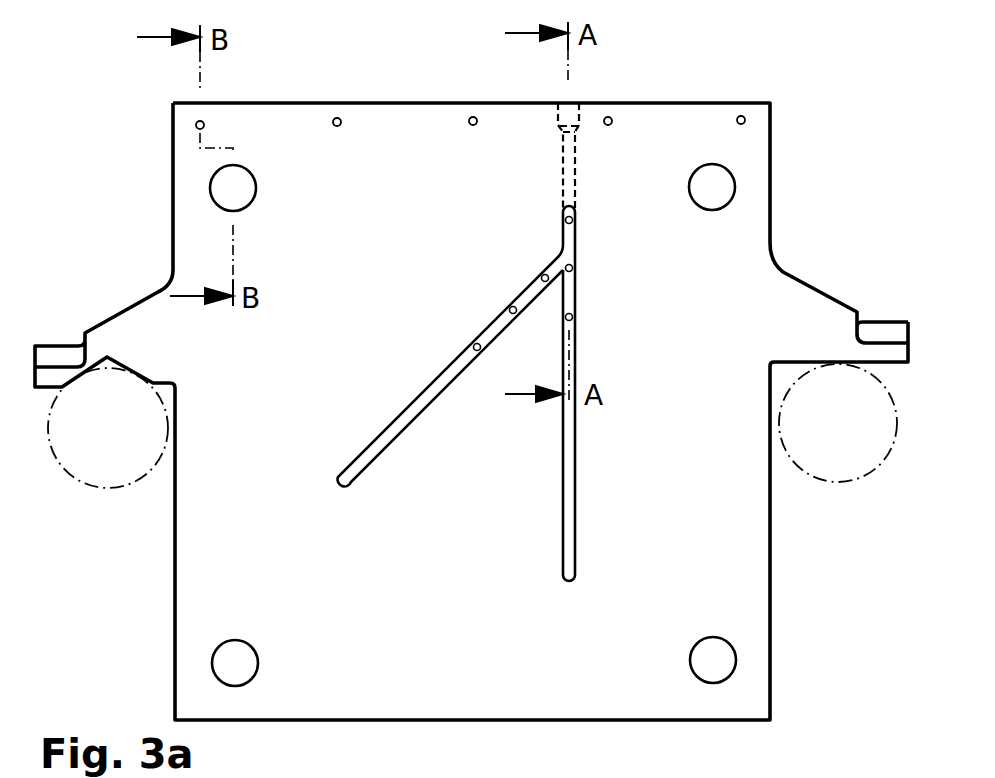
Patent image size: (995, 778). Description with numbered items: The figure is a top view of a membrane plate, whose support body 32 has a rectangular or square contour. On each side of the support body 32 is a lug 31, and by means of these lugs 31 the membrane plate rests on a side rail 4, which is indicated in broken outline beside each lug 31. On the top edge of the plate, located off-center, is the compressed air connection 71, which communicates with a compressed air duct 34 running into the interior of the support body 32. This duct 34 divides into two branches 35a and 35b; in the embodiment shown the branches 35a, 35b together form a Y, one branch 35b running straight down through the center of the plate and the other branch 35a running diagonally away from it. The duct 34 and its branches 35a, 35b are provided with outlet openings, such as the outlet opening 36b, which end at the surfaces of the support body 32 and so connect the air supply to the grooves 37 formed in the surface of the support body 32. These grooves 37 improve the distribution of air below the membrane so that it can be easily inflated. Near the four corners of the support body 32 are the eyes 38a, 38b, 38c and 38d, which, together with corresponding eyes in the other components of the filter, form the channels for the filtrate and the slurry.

The support body 32 is at (725, 98).
The lugs 31 is at (110, 335).
The compressed air duct 34 is at (577, 170).
The branch 35a is at (490, 322).
The branch 35b is at (578, 295).
The outlet opening 36b is at (576, 268).
The grooves 37 is at (568, 533).
The eye 38a is at (722, 186).
The eye 38b is at (223, 186).
The eye 38c is at (225, 668).
The eye 38d is at (723, 665).
The side rail 4 is at (108, 478).
The compressed air connection 71 is at (572, 100).